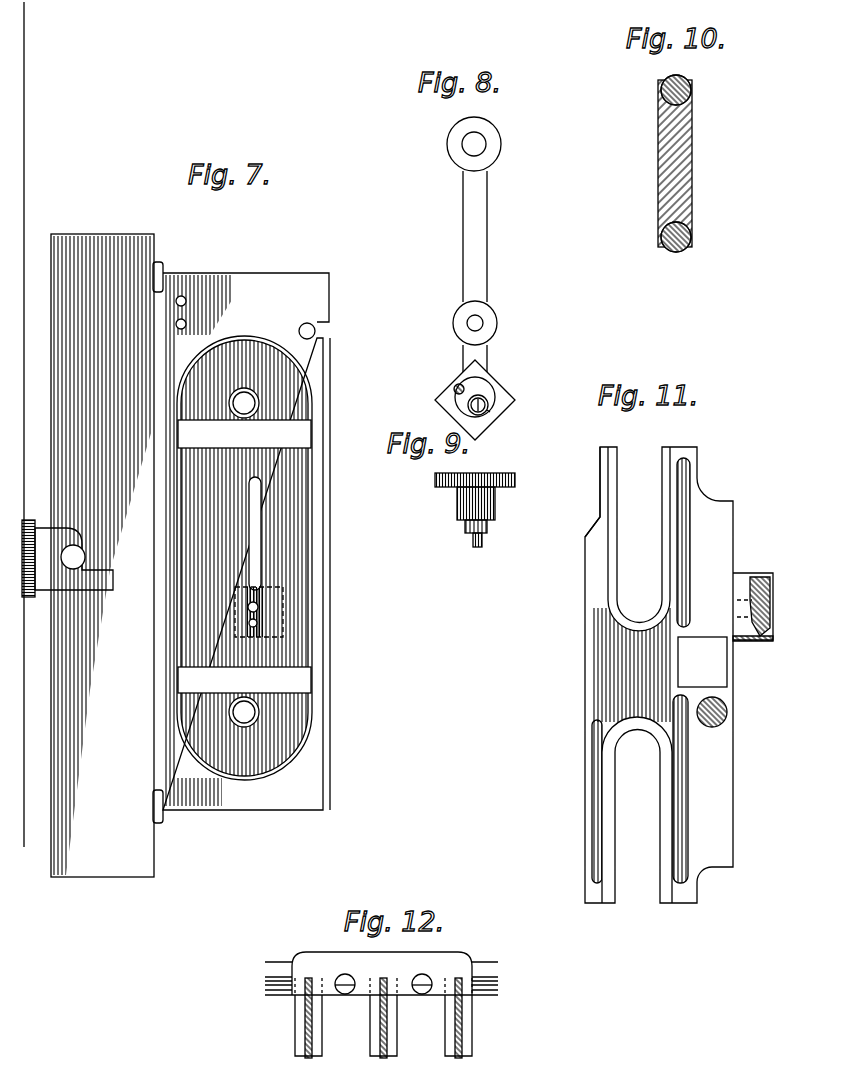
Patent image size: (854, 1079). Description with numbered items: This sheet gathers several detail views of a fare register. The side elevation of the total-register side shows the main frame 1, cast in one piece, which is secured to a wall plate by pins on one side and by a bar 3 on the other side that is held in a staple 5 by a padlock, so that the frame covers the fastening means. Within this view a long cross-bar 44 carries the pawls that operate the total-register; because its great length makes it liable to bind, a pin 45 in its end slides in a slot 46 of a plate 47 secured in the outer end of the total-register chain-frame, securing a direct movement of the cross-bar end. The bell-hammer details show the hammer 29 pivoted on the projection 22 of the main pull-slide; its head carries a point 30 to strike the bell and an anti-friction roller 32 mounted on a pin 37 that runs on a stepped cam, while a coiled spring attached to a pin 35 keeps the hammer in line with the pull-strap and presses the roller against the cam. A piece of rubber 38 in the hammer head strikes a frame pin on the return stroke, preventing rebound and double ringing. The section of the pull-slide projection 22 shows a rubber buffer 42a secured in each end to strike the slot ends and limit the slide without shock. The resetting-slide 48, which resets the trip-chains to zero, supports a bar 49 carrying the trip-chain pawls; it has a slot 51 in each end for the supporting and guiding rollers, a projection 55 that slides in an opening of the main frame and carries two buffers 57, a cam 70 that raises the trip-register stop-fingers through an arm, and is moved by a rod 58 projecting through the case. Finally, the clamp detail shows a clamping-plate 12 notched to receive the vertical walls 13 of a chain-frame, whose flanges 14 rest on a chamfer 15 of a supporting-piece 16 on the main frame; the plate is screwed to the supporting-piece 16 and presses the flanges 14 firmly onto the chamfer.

In FIG. 7, the main frame 1 is at (121, 815).
In FIG. 7, the bar 3 is at (71, 562).
In FIG. 7, the staple 5 is at (67, 558).
In FIG. 12, the clamping-plate 12 is at (440, 965).
In FIG. 12, the vertical walls 13 is at (480, 1027).
In FIG. 12, the flanges 14 is at (445, 1007).
In FIG. 12, the chamfer 15 is at (490, 987).
In FIG. 12, the supporting-piece 16 is at (487, 973).
In FIG. 10, the projection 22 is at (688, 175).
In FIG. 8, the bell-hammer 29 is at (470, 253).
In FIG. 8, the point 30 is at (443, 396).
In FIG. 9, the point 30 is at (445, 488).
In FIG. 8, the anti-friction roller 32 is at (485, 400).
In FIG. 9, the anti-friction roller 32 is at (466, 528).
In FIG. 8, the pin 35 is at (483, 323).
In FIG. 8, the pin 37 is at (490, 410).
In FIG. 9, the pin 37 is at (485, 543).
In FIG. 8, the rubber 38 is at (456, 386).
In FIG. 10, the rubber buffer 42a is at (700, 258).
In FIG. 7, the cross-bar 44 is at (258, 623).
In FIG. 7, the pin 45 is at (259, 605).
In FIG. 7, the slot 46 is at (255, 557).
In FIG. 7, the plate 47 is at (293, 507).
In FIG. 11, the resetting-slide 48 is at (643, 675).
In FIG. 11, the bar 49 is at (712, 670).
In FIG. 11, the slot 51 is at (637, 675).
In FIG. 11, the projection 55 is at (730, 593).
In FIG. 11, the buffer 57 is at (770, 652).
In FIG. 11, the rod 58 is at (727, 712).
In FIG. 11, the cam 70 is at (600, 503).